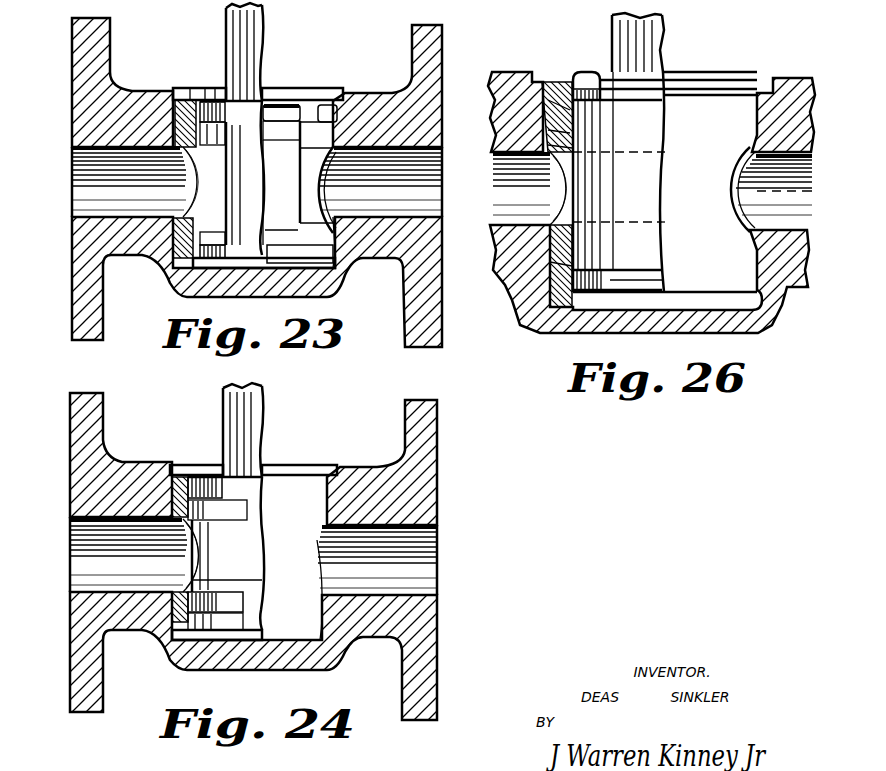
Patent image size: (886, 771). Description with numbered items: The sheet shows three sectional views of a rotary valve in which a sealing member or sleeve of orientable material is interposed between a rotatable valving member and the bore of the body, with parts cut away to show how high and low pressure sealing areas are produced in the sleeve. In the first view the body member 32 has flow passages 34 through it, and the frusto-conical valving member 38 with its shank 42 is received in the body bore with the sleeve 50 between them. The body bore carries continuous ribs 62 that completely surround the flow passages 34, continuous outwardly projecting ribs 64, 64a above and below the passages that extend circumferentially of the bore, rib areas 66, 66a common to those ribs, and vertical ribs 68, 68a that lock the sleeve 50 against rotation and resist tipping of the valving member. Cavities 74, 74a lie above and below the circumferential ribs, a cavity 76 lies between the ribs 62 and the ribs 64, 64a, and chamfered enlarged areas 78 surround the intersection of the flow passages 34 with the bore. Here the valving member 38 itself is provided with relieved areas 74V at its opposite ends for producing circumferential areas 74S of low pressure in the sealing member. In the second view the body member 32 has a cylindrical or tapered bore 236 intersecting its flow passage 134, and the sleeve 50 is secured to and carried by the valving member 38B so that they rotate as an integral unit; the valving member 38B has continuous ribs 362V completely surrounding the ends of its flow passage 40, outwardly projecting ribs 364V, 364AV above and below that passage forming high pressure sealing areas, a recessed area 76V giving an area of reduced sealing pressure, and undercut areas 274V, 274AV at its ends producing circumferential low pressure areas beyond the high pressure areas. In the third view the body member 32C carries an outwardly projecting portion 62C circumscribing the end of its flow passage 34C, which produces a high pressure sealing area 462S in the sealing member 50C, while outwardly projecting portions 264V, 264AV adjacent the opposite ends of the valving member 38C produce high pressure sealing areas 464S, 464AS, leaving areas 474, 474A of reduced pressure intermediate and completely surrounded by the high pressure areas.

In FIG. 23, the body member 32 is at (133, 89).
In FIG. 24, the body member 32 is at (412, 435).
In FIG. 23, the flow passages 34 is at (72, 191).
In FIG. 23, the rotatable valving member 38 is at (252, 182).
In FIG. 23, the shank 42 is at (230, 71).
In FIG. 26, the shank 42 is at (625, 47).
In FIG. 24, the shank 42 is at (230, 415).
In FIG. 23, the sealing member or sleeve 50 is at (186, 194).
In FIG. 24, the sealing member or sleeve 50 is at (186, 571).
In FIG. 23, the continuous ribs 62 is at (313, 194).
In FIG. 23, the continuous outwardly projecting rib 64 is at (283, 132).
In FIG. 23, the rib areas 66 is at (314, 150).
In FIG. 23, the vertical rib 68 is at (309, 112).
In FIG. 23, the cavity 74 is at (277, 112).
In FIG. 23, the circumferential areas of low pressure 74S is at (190, 108).
In FIG. 23, the relieved areas 74V is at (245, 116).
In FIG. 23, the cavity 76 is at (288, 162).
In FIG. 23, the enlarged areas 78 is at (325, 212).
In FIG. 23, the continuous outwardly projecting rib 64a is at (281, 226).
In FIG. 23, the rib area 66a is at (333, 222).
In FIG. 23, the vertical rib 68a is at (270, 260).
In FIG. 23, the cavity 74a is at (366, 258).
In FIG. 24, the flow passage 134 is at (70, 571).
In FIG. 24, the cylindrical or tapered bore 236 is at (330, 474).
In FIG. 24, the undercut or relieved area 274V is at (223, 488).
In FIG. 24, the outwardly projecting rib 364V is at (243, 511).
In FIG. 24, the valving member 38B is at (250, 546).
In FIG. 24, the recessed area 76V is at (248, 555).
In FIG. 24, the continuous ribs 362V is at (244, 580).
In FIG. 24, the outwardly projecting rib 364AV is at (241, 602).
In FIG. 24, the undercut or relieved area 274AV is at (243, 622).
In FIG. 26, the body member 32C is at (788, 78).
In FIG. 26, the body flow passage 34C is at (526, 190).
In FIG. 26, the valving member 38C is at (652, 131).
In FIG. 26, the flow passages 40 is at (652, 224).
In FIG. 26, the sealing member 50C is at (566, 196).
In FIG. 26, the outwardly projecting portion 62C is at (742, 182).
In FIG. 26, the outwardly projecting portion 264V is at (601, 99).
In FIG. 26, the outwardly projecting portion 264AV is at (668, 282).
In FIG. 26, the high pressure sealing area 464S is at (563, 118).
In FIG. 26, the high pressure sealing area 462S is at (556, 144).
In FIG. 26, the area of reduced pressure 474 is at (560, 118).
In FIG. 26, the area of reduced pressure 474A is at (552, 265).
In FIG. 26, the high pressure sealing area 464AS is at (548, 284).